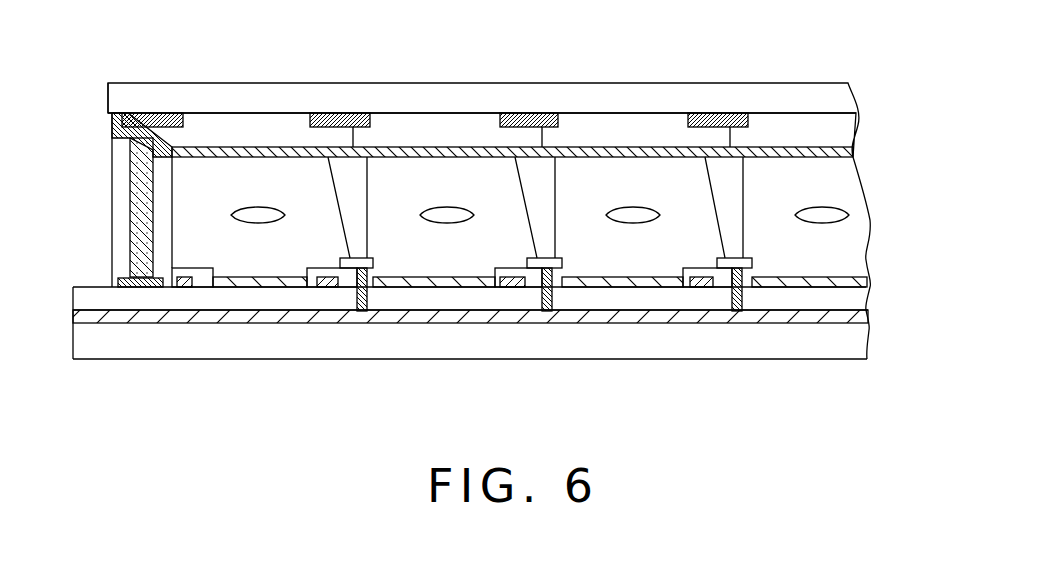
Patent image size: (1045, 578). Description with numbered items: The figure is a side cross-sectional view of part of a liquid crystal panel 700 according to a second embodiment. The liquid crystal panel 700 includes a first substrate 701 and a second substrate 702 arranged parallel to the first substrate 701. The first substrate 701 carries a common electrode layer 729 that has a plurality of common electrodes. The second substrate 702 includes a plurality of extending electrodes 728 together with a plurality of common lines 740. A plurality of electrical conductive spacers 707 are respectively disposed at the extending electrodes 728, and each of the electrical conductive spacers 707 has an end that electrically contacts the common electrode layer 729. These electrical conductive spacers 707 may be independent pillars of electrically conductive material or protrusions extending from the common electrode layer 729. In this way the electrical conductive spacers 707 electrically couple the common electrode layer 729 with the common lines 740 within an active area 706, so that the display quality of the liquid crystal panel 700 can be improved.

The liquid crystal panel 700 is at (486, 42).
The first substrate 701 is at (104, 80).
The second substrate 702 is at (510, 339).
The active area 706 is at (862, 366).
The electrical conductive spacers 707 is at (730, 190).
The extending electrodes 728 is at (362, 263).
The common electrode layer 729 is at (833, 152).
The common lines 740 is at (107, 318).